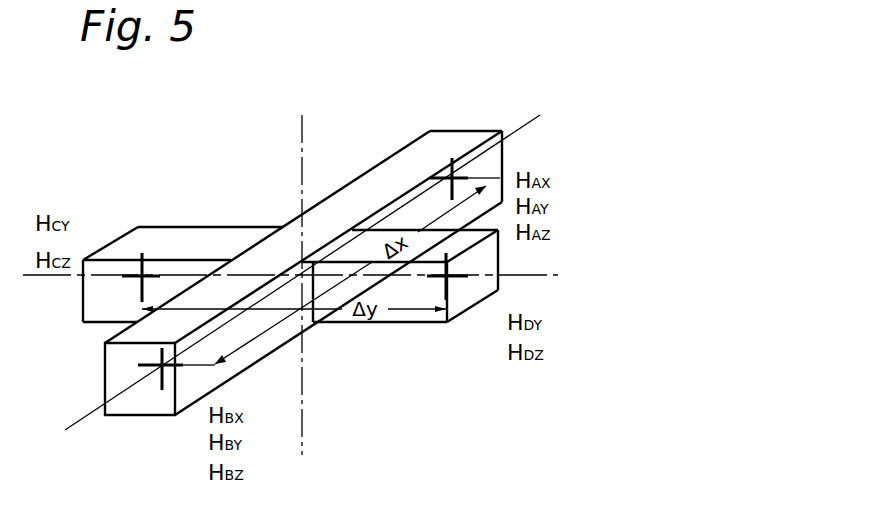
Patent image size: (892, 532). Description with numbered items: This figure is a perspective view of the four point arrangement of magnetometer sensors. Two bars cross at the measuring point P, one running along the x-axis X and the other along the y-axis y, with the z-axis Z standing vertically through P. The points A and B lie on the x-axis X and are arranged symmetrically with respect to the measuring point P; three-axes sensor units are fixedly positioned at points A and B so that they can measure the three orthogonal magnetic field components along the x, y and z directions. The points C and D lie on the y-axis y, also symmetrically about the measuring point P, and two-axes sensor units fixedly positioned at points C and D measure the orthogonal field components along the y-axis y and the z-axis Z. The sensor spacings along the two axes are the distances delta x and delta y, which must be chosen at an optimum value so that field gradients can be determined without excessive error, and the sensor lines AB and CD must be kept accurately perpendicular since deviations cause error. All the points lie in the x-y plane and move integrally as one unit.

The point A is at (463, 152).
The point B is at (160, 396).
The point C is at (183, 260).
The point D is at (400, 291).
The measuring point P is at (293, 254).
The x-axis X is at (311, 266).
The y-axis y is at (299, 274).
The z-axis Z is at (303, 269).